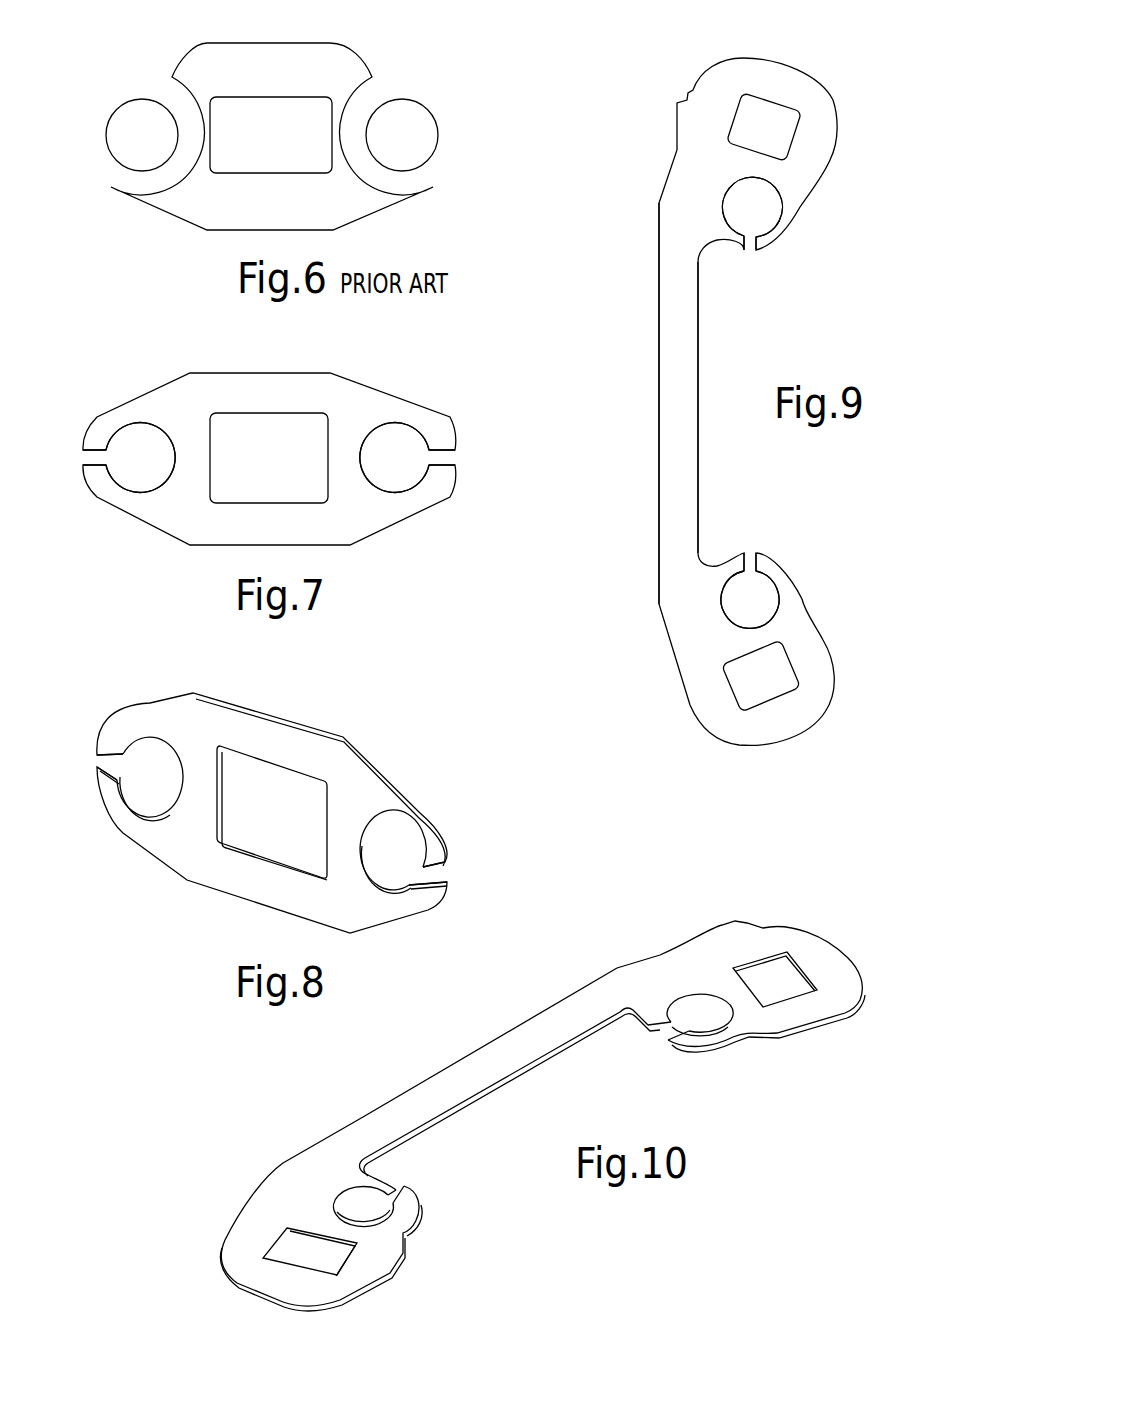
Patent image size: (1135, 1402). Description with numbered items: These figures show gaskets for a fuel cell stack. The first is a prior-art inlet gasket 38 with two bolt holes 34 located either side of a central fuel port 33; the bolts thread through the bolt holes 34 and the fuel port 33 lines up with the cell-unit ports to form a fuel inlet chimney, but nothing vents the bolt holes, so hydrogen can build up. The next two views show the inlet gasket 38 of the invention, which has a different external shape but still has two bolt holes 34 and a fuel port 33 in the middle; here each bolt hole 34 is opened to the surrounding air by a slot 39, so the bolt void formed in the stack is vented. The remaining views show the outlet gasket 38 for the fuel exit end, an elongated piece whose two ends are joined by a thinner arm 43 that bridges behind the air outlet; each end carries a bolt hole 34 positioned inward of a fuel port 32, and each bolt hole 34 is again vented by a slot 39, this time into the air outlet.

In FIG. 9, the fuel port 32 is at (770, 123).
In FIG. 10, the fuel port 32 is at (777, 978).
In FIG. 6, the fuel port 33 is at (248, 113).
In FIG. 7, the fuel port 33 is at (247, 455).
In FIG. 8, the fuel port 33 is at (245, 767).
In FIG. 6, the bolt hole 34 is at (142, 118).
In FIG. 7, the bolt hole 34 is at (143, 447).
In FIG. 8, the bolt hole 34 is at (142, 770).
In FIG. 9, the bolt hole 34 is at (753, 212).
In FIG. 10, the bolt hole 34 is at (695, 1007).
In FIG. 6, the gasket 38 is at (280, 43).
In FIG. 7, the gasket 38 is at (275, 373).
In FIG. 8, the gasket 38 is at (347, 737).
In FIG. 9, the gasket 38 is at (677, 130).
In FIG. 10, the gasket 38 is at (615, 968).
In FIG. 7, the slot 39 is at (93, 460).
In FIG. 8, the slot 39 is at (103, 758).
In FIG. 9, the slot 39 is at (752, 247).
In FIG. 10, the slot 39 is at (657, 1037).
In FIG. 9, the arm 43 is at (678, 404).
In FIG. 10, the arm 43 is at (488, 1063).